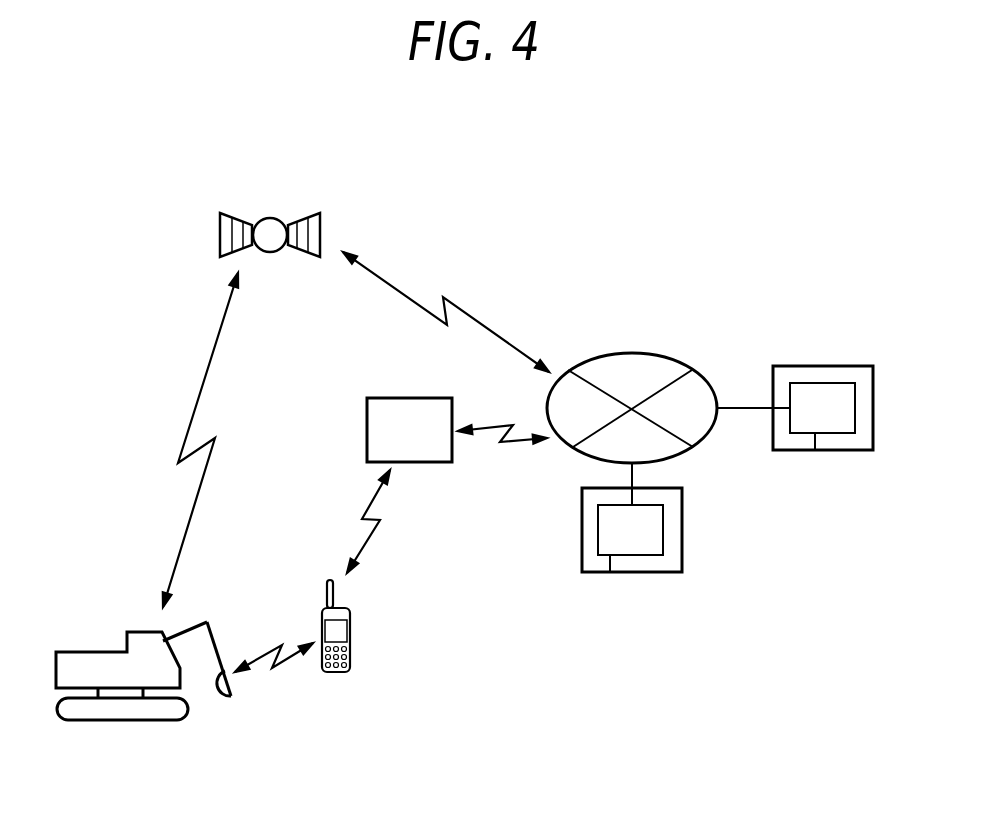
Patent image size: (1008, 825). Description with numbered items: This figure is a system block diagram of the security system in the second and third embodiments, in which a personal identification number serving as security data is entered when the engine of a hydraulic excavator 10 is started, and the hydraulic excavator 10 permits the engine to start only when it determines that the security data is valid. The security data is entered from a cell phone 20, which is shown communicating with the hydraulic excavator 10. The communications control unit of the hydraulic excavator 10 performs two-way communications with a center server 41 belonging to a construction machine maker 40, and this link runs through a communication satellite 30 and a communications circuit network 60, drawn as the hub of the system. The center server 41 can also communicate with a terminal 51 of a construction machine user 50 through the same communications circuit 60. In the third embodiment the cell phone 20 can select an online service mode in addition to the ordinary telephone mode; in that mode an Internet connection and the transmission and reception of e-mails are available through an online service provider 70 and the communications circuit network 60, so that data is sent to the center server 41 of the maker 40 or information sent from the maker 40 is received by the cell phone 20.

The hydraulic excavator 10 is at (105, 652).
The cell phone 20 is at (352, 640).
The communication satellite 30 is at (298, 220).
The construction machine maker 40 is at (617, 570).
The center server 41 is at (610, 572).
The construction machine user 50 is at (815, 450).
The terminal 51 is at (815, 450).
The communications circuit network 60 is at (635, 353).
The online service provider 70 is at (367, 433).